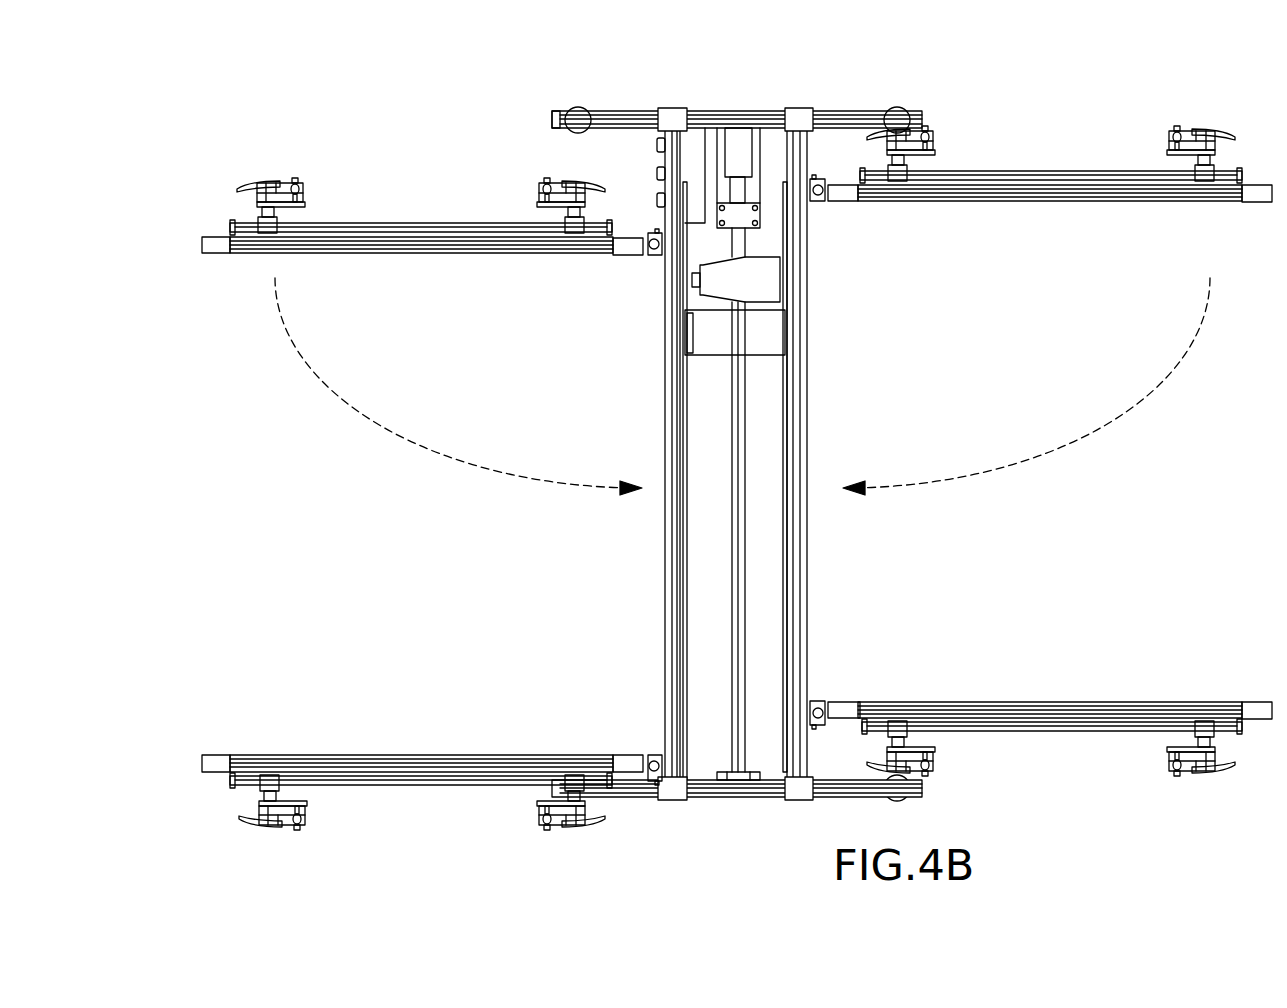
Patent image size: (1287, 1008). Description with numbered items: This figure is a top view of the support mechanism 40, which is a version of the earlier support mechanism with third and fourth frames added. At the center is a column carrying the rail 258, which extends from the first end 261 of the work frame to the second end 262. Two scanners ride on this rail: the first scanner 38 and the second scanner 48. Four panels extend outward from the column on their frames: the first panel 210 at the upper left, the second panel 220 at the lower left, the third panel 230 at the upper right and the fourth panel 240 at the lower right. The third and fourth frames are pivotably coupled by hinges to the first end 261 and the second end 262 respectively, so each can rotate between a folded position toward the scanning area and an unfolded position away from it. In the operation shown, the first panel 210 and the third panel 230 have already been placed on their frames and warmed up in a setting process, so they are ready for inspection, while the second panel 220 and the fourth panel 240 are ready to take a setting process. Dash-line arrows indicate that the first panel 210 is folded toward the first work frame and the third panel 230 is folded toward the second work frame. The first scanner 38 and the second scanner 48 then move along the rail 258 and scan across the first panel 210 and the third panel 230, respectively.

The support mechanism 40 is at (258, 124).
The first scanner 38 is at (700, 283).
The second scanner 48 is at (760, 355).
The first panel 210 is at (412, 222).
The second panel 220 is at (360, 753).
The third panel 230 is at (1022, 170).
The fourth panel 240 is at (1027, 735).
The rail 258 is at (736, 567).
The first end 261 is at (729, 98).
The second end 262 is at (748, 826).